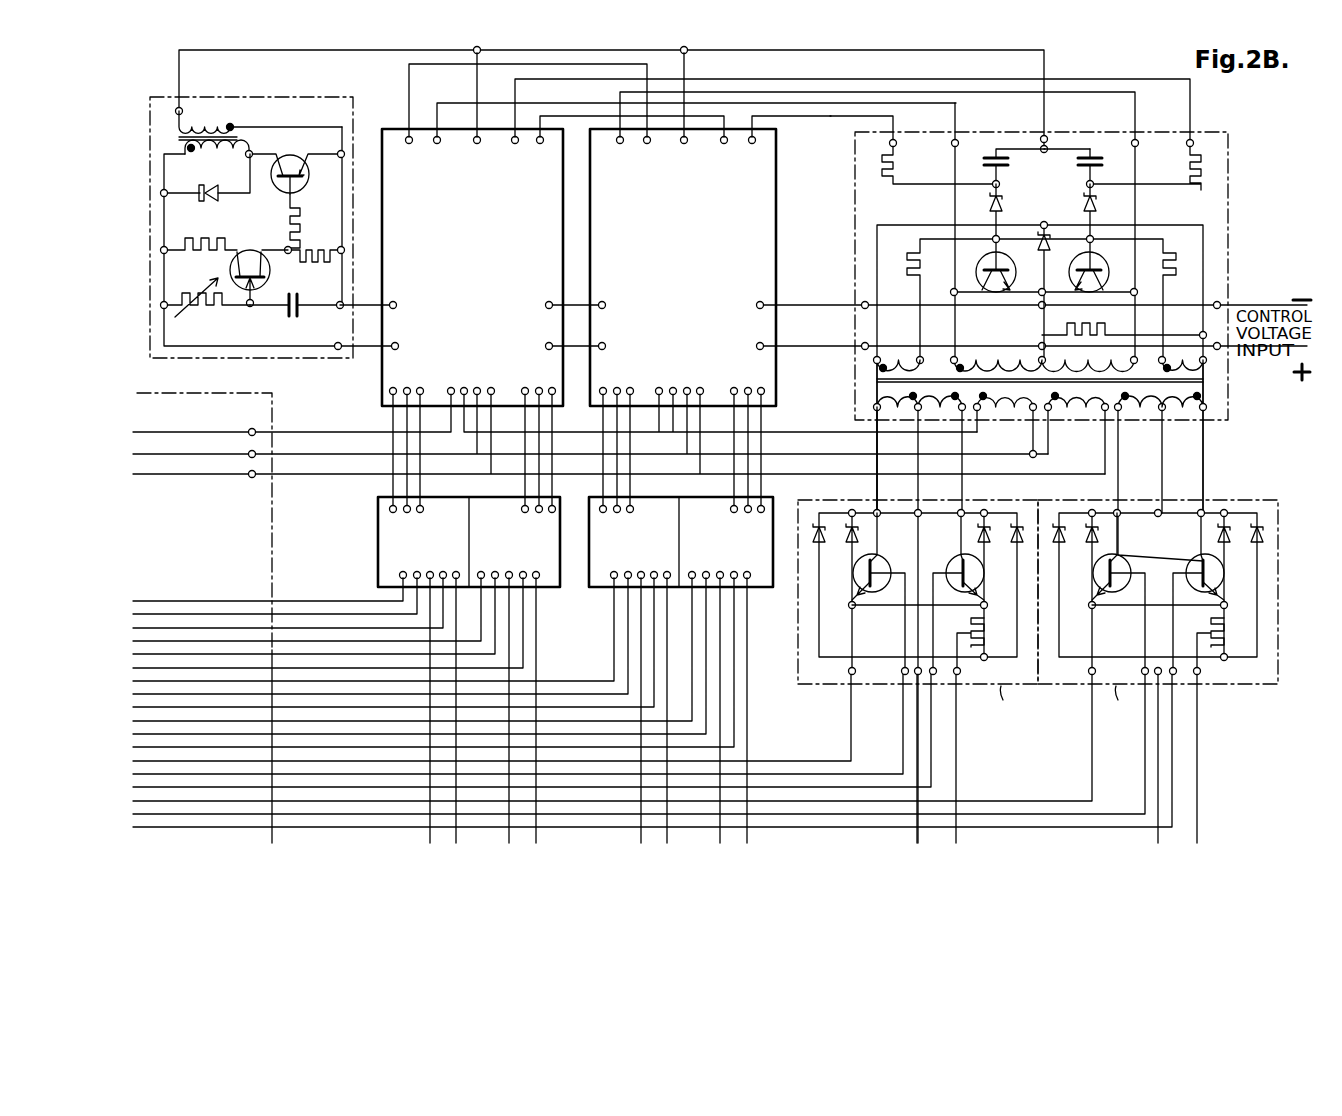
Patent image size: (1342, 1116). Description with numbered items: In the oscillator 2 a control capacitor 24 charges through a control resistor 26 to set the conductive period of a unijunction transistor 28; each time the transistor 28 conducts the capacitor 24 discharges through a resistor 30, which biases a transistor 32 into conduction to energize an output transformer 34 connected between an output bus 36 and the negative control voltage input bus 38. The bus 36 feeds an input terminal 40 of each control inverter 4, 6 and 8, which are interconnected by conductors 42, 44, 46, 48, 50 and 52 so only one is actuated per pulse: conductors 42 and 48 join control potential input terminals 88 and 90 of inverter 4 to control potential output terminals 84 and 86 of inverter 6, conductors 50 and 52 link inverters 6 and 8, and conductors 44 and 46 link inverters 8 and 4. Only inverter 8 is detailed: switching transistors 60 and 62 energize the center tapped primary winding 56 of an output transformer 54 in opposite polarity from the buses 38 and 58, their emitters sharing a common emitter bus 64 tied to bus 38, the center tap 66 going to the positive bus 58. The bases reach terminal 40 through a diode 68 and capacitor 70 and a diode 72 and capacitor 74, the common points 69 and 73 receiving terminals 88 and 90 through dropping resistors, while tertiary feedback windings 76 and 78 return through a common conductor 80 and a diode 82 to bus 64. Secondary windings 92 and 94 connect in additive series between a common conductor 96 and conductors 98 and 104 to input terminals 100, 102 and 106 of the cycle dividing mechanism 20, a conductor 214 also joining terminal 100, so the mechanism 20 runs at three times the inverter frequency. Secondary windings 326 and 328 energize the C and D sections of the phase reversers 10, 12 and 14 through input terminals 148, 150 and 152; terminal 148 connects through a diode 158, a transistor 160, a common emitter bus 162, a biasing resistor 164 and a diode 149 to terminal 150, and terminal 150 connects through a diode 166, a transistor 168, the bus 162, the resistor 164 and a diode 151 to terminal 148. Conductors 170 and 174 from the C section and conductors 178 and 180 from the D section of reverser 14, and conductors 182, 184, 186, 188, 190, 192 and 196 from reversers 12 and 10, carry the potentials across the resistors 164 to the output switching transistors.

The oscillator 2 is at (271, 97).
The output bus 36 is at (324, 50).
The output transformer 34 is at (242, 136).
The transistor 32 is at (300, 158).
The resistor 30 is at (316, 251).
The unijunction transistor 28 is at (245, 252).
The control resistor 26 is at (191, 314).
The control capacitor 24 is at (298, 300).
The negative control voltage input bus 38 is at (359, 305).
The positive control voltage input bus 58 is at (356, 346).
The cycle dividing mechanism 20 is at (207, 603).
The control inverter 4 is at (470, 248).
The control inverter 6 is at (677, 248).
The conductor 42 is at (428, 64).
The conductor 44 is at (492, 103).
The conductor 46 is at (518, 95).
The conductor 48 is at (582, 115).
The conductor 50 is at (965, 103).
The conductor 52 is at (830, 118).
The control potential input terminal 88 is at (409, 144).
The control potential output terminal 84 is at (647, 144).
The input terminal 40 is at (477, 144).
The control potential output terminal 86 is at (724, 144).
The control potential input terminal 90 is at (540, 144).
The control inverter 8 is at (1236, 162).
The capacitor 70 is at (990, 156).
The common point 69 is at (992, 181).
The capacitor 74 is at (1086, 184).
The common point 73 is at (1095, 184).
The diode 68 is at (1003, 204).
The diode 72 is at (1095, 204).
The common conductor 80 is at (914, 225).
The diode 82 is at (1051, 252).
The common emitter bus 64 is at (1047, 273).
The switching transistor 60 is at (1004, 258).
The switching transistor 62 is at (1098, 270).
The center tap 66 is at (1046, 358).
The output transformer 54 is at (935, 378).
The tertiary feedback winding 76 is at (891, 377).
The center tapped primary winding 56 is at (989, 375).
The tertiary feedback winding 78 is at (1176, 377).
The secondary winding 328 is at (920, 618).
The secondary winding 92 is at (1041, 434).
The secondary winding 94 is at (1116, 453).
The secondary winding 326 is at (1184, 436).
The conductor 98 is at (310, 432).
The input terminal 102 is at (250, 428).
The common conductor 96 is at (346, 454).
The input terminal 100 is at (248, 452).
The conductor 214 is at (146, 454).
The conductor 104 is at (326, 474).
The third control voltage input terminal 106 is at (252, 477).
The phase reverser 10 is at (378, 525).
The phase reverser 12 is at (589, 624).
The conductor 196 is at (400, 600).
The conductor 192 is at (512, 625).
The conductor 190 is at (537, 642).
The conductor 188 is at (641, 652).
The conductor 186 is at (667, 660).
The conductor 184 is at (720, 712).
The conductor 182 is at (747, 736).
The conductor 178 is at (917, 738).
The conductor 180 is at (956, 760).
The conductor 170 is at (1158, 760).
The conductor 174 is at (1197, 754).
The phase reverser 14 is at (820, 684).
The diode 151 is at (815, 523).
The diode 149 is at (1019, 523).
The potential input terminal 148 is at (867, 514).
The potential input terminal 150 is at (960, 515).
The potential input terminal 152 is at (914, 516).
The diode 158 is at (852, 543).
The transistor 160 is at (856, 585).
The common emitter bus 162 is at (882, 605).
The diode 166 is at (976, 540).
The transistor 168 is at (980, 580).
The biasing resistor 164 is at (970, 624).